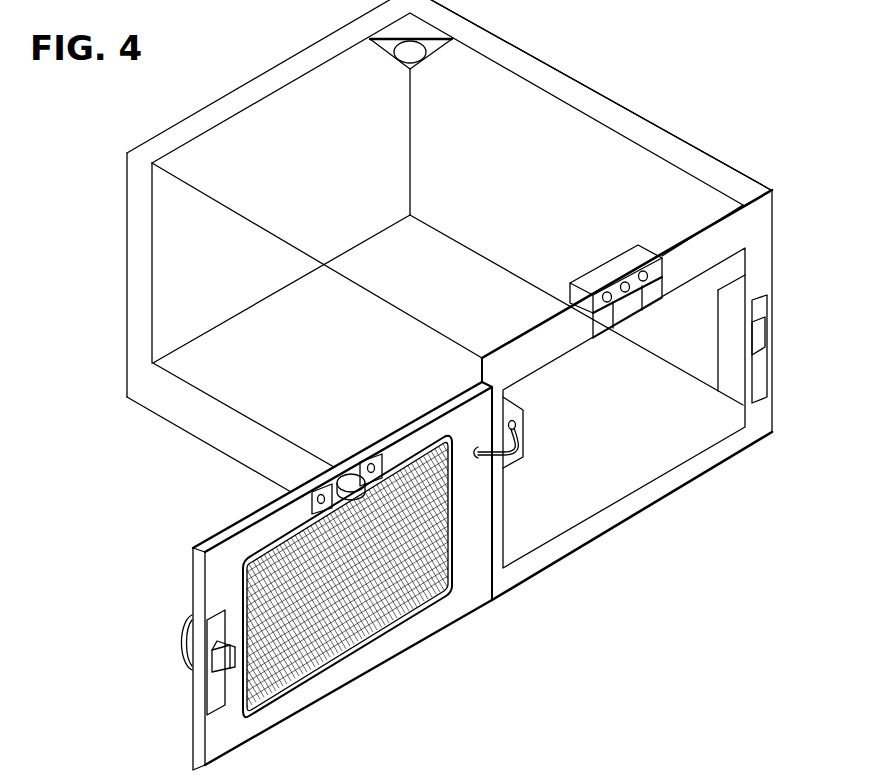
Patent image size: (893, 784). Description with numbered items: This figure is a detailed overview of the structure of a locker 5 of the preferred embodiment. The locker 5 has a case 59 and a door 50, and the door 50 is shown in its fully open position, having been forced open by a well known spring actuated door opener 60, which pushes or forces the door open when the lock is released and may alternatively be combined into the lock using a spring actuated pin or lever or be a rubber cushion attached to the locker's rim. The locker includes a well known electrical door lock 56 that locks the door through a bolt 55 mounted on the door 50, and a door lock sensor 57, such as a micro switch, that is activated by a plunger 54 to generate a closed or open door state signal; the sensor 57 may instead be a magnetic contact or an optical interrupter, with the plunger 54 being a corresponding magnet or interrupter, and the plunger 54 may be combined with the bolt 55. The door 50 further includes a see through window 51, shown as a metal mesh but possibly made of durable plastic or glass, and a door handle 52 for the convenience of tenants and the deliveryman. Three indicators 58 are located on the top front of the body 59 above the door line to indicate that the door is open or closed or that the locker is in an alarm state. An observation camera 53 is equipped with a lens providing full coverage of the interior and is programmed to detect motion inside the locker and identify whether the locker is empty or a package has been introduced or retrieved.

The locker 5 is at (94, 257).
The door 50 is at (435, 625).
The see through window 51 is at (323, 641).
The door handle 52 is at (186, 622).
The observation camera 53 is at (384, 38).
The plunger 54 is at (343, 482).
The bolt 55 is at (232, 672).
The door lock 56 is at (730, 312).
The door lock sensor 57 is at (652, 297).
The indicators 58 is at (633, 270).
The case 59 is at (564, 80).
The door opener 60 is at (525, 415).